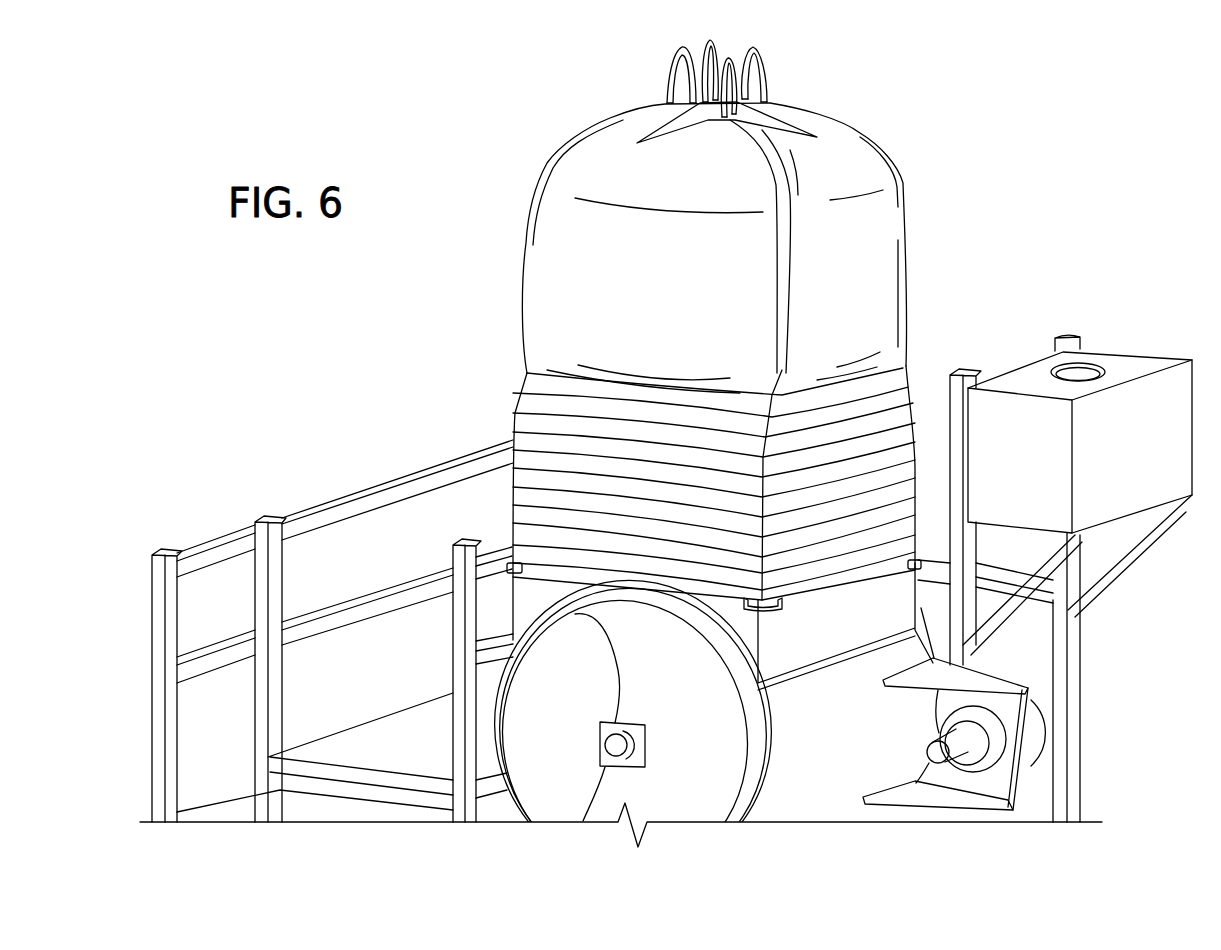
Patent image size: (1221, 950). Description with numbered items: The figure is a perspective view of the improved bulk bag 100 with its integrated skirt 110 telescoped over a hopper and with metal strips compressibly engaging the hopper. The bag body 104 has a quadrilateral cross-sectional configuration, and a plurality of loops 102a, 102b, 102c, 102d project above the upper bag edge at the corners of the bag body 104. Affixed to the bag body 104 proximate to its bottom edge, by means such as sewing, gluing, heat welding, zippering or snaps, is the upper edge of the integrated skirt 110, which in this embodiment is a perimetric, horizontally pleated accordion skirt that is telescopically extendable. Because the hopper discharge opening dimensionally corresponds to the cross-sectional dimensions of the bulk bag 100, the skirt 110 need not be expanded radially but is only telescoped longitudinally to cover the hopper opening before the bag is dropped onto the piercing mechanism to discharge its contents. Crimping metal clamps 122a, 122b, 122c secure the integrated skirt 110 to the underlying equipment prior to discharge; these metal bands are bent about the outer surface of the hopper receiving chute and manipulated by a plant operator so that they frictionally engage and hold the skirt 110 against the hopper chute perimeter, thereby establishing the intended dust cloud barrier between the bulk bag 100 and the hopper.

The improved bulk bag 100 is at (987, 149).
The loop 102a is at (668, 64).
The loop 102b is at (716, 86).
The loop 102c is at (718, 41).
The loop 102d is at (766, 63).
The bag body 104 is at (527, 243).
The integrated skirt 110 is at (512, 407).
The crimping metal clamp 122a is at (510, 563).
The crimping metal clamp 122b is at (777, 609).
The crimping metal clamp 122c is at (916, 560).